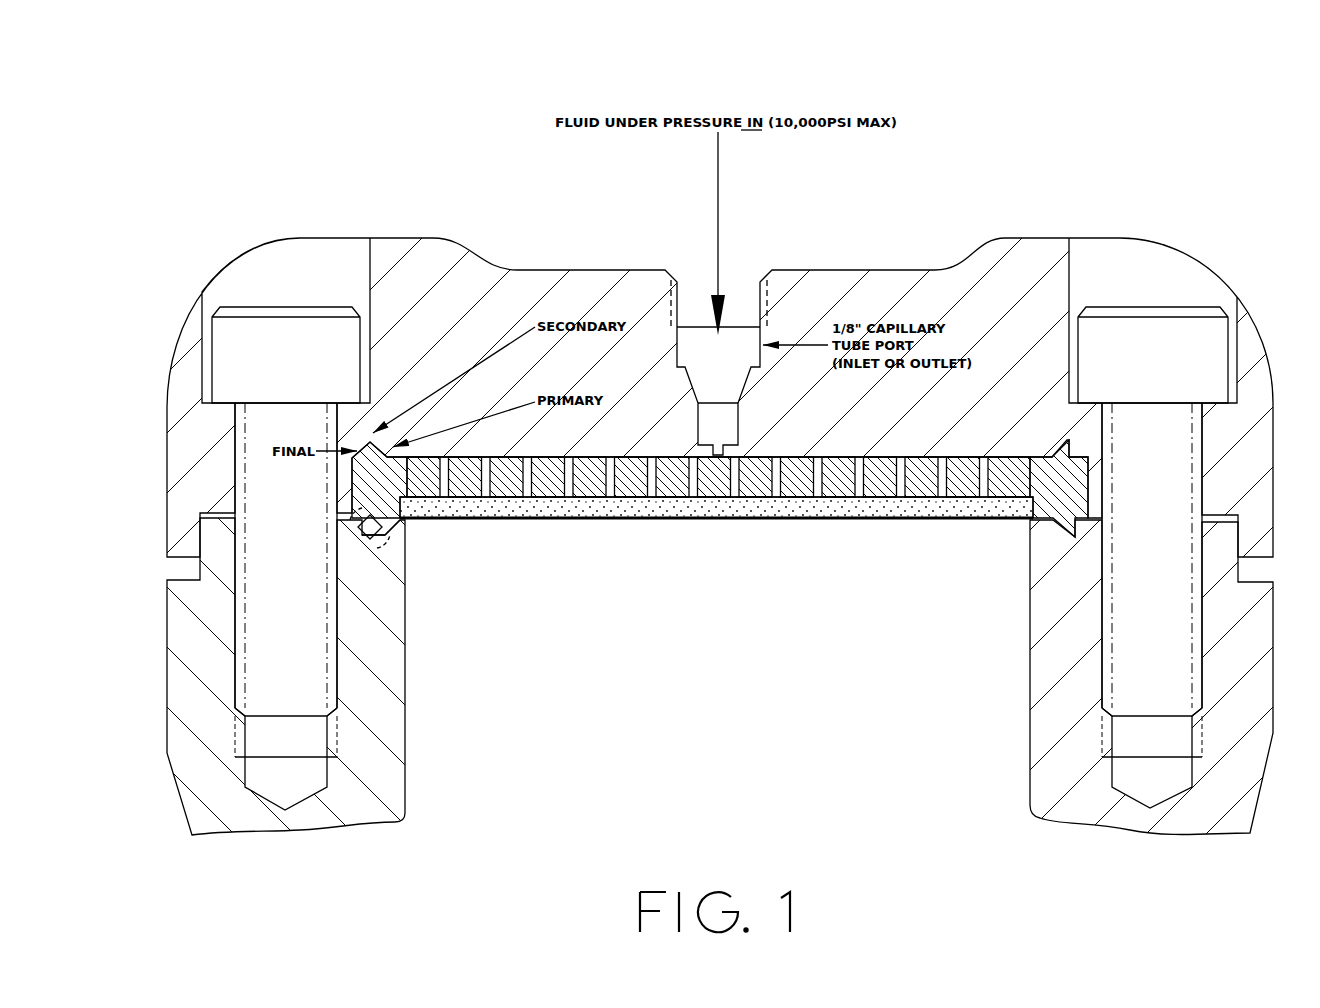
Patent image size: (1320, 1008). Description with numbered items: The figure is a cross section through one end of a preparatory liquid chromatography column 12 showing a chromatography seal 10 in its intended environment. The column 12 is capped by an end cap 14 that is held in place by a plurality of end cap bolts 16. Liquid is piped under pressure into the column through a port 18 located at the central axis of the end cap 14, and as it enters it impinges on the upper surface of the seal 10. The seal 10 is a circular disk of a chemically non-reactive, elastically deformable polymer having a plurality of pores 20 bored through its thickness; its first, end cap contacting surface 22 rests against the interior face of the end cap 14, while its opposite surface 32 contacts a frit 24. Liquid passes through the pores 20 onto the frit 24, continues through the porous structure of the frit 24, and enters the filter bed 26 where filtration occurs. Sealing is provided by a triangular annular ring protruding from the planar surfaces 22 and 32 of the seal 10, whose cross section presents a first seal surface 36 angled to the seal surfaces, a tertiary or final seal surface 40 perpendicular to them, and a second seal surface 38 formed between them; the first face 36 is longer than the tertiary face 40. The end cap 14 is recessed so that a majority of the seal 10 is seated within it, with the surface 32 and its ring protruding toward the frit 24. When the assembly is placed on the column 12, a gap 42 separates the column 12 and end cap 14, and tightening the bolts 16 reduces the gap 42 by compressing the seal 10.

The chromatography seal 10 is at (968, 470).
The chromatography column 12 is at (1037, 607).
The end cap 14 is at (403, 255).
The end cap bolts 16 is at (282, 325).
The port 18 is at (724, 190).
The pores 20 is at (450, 462).
The end cap contacting surface 22 is at (905, 320).
The frit 24 is at (940, 510).
The filter bed 26 is at (716, 705).
The frit contacting surface 32 is at (808, 500).
The first seal surface 36 is at (387, 538).
The second seal surface 38 is at (352, 540).
The tertiary seal surface 40 is at (362, 532).
The gap 42 is at (1090, 530).